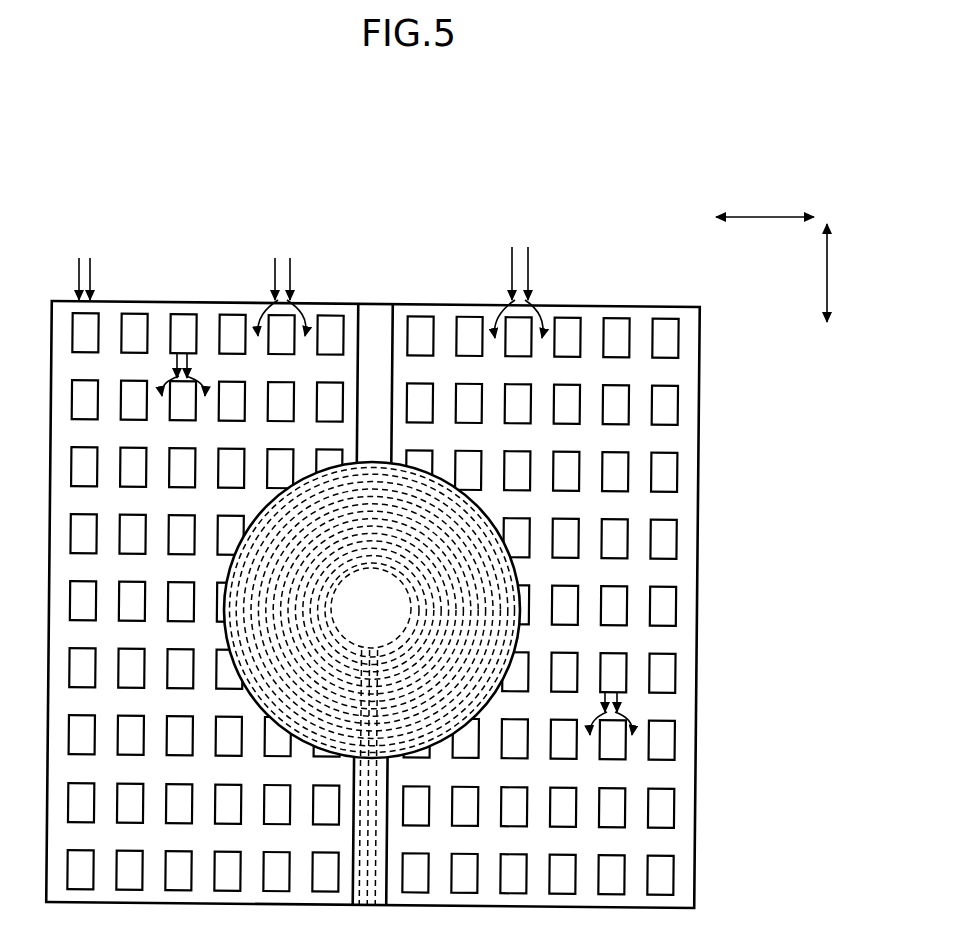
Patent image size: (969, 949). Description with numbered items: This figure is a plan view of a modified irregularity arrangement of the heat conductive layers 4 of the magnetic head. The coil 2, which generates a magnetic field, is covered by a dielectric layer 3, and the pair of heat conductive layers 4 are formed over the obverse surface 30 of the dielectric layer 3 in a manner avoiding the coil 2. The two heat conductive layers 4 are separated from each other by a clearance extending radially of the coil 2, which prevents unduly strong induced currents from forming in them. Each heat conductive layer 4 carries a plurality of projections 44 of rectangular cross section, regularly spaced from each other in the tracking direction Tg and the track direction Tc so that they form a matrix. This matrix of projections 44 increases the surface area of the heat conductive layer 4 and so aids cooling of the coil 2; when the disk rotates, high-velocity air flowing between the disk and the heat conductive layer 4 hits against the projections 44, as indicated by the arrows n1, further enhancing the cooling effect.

The coil 2 is at (509, 579).
The dielectric layer 3 is at (382, 318).
The obverse surface 30 is at (368, 318).
The heat conductive layer 4 is at (162, 318).
The projection 44 is at (613, 337).
The arrows n1 is at (368, 491).
The tracking direction Tg is at (765, 198).
The track direction Tc is at (847, 273).